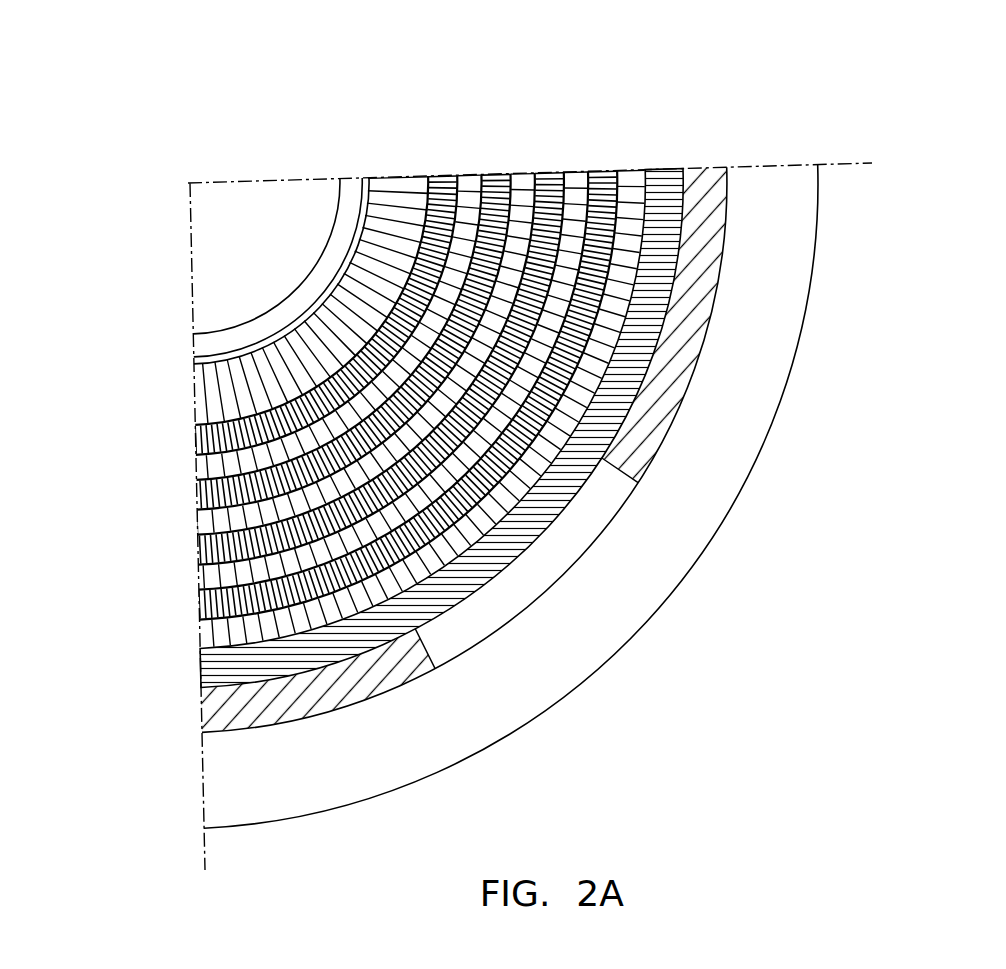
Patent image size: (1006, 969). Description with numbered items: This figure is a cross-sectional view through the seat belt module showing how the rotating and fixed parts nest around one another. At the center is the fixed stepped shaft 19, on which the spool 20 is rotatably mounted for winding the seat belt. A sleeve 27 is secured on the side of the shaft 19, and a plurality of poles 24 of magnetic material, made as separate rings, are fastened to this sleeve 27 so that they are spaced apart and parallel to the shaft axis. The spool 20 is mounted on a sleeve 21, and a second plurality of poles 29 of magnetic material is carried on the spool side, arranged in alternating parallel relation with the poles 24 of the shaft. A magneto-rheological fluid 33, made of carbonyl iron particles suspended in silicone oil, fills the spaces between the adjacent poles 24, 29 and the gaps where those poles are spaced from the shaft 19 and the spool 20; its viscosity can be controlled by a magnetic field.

The fixed stepped shaft 19 is at (280, 222).
The sleeve 27 is at (395, 215).
The poles 24 is at (470, 218).
The poles 29 is at (240, 437).
The sleeve 21 is at (243, 658).
The spool 20 is at (397, 668).
The magneto-rheological fluid 33 is at (640, 213).